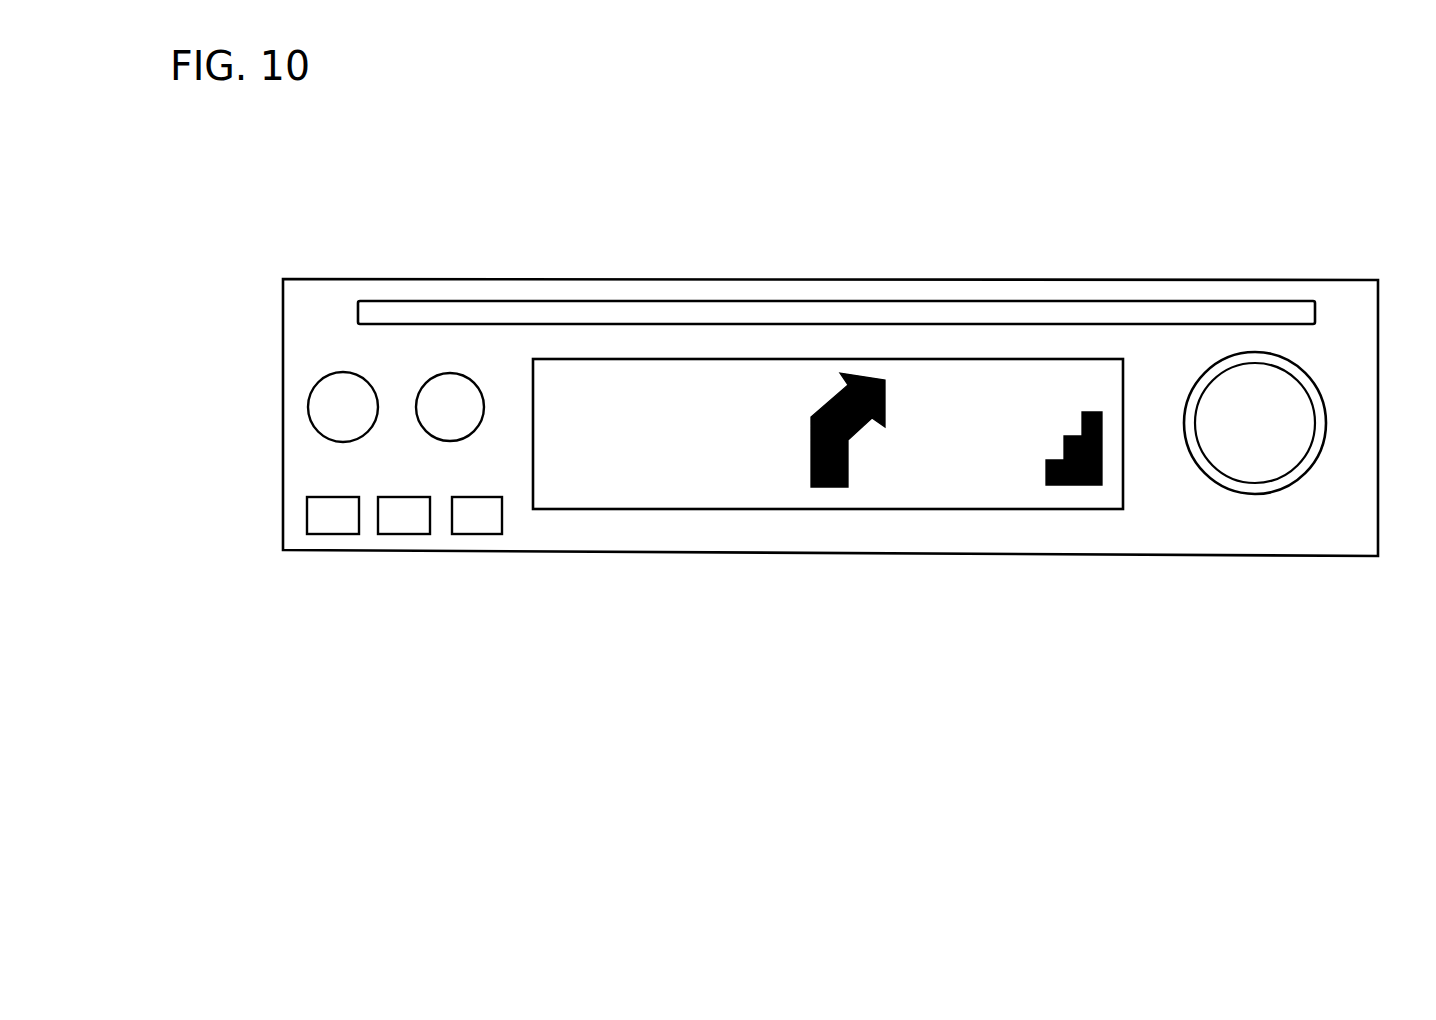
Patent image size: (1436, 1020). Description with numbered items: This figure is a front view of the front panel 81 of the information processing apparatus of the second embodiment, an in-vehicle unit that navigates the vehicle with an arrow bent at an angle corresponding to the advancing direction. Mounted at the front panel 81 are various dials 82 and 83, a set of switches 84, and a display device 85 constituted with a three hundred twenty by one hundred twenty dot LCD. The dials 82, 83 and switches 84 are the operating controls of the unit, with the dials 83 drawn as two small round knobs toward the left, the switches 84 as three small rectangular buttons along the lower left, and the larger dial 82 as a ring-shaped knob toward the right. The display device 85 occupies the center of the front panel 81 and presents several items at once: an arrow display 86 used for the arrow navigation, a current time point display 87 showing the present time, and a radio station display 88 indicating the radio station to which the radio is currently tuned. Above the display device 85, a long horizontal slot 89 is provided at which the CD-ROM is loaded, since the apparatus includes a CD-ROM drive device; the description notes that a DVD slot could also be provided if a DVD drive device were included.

The front panel 81 is at (1340, 355).
The dial 82 is at (1255, 460).
The dial 83 is at (450, 433).
The switches 84 is at (475, 523).
The display device 85 is at (962, 472).
The arrow display 86 is at (825, 403).
The current time point display 87 is at (626, 365).
The radio station display 88 is at (643, 485).
The slot 89 is at (1012, 313).